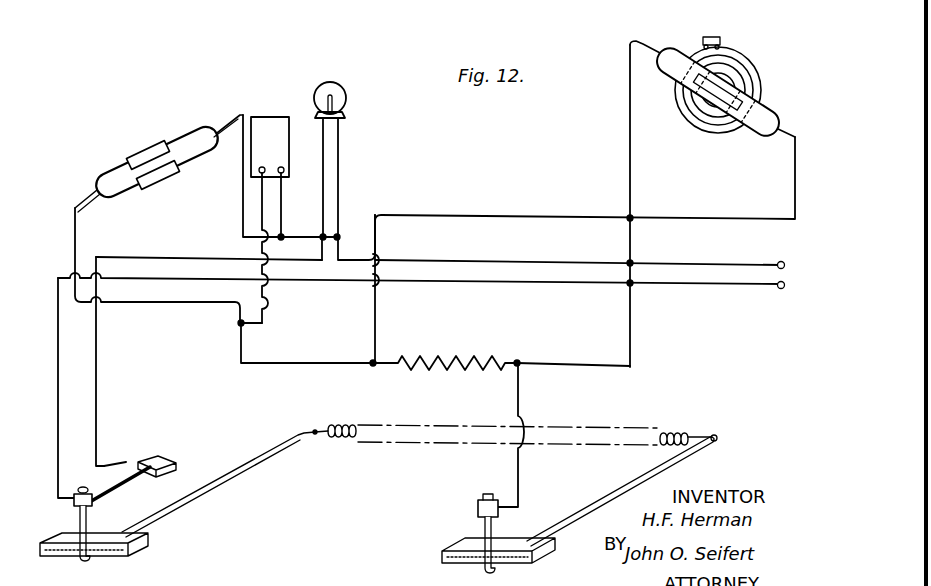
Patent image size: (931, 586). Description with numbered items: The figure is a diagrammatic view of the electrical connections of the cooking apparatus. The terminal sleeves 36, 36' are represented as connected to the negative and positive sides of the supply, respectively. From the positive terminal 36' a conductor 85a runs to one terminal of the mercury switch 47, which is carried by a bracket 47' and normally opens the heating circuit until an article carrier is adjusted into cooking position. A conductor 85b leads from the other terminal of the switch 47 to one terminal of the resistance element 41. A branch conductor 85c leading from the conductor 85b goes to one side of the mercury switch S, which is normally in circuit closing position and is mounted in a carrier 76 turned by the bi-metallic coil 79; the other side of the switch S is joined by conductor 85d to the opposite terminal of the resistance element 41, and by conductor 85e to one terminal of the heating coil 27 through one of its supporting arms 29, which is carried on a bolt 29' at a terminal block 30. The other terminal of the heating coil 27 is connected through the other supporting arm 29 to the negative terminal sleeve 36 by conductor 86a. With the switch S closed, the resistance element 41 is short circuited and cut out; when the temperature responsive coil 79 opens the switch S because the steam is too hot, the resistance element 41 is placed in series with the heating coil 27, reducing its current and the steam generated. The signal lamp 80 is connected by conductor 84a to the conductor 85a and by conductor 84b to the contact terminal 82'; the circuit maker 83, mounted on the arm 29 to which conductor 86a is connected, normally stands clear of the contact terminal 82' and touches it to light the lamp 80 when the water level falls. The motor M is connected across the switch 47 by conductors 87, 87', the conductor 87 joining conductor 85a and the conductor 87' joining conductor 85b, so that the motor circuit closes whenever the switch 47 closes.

The heating coil 27 is at (672, 430).
The float carrying arm 29 is at (402, 488).
The bolt 29' is at (280, 513).
The terminal block 30 is at (140, 551).
The contact terminal sleeve 36 is at (787, 305).
The contact terminal sleeve 36' is at (788, 252).
The resistance element 41 is at (470, 360).
The mercury switch 47 is at (159, 151).
The bracket 47' is at (146, 156).
The carrier 76 is at (720, 106).
The bi-metallic coil 79 is at (761, 79).
The electric lamp 80 is at (346, 92).
The contact terminal 82' is at (184, 457).
The circuit maker 83 is at (127, 466).
The conductor 84a is at (341, 170).
The conductor 84b is at (322, 190).
The conductor 85a is at (310, 238).
The conductor 85b is at (197, 303).
The branch conductor 85c is at (432, 215).
The conductor 85d is at (631, 332).
The conductor 85e is at (520, 411).
The conductor 86a is at (60, 380).
The conductor 87 is at (288, 248).
The conductor 87' is at (269, 320).
The motor M is at (270, 119).
The mercury switch S is at (674, 52).